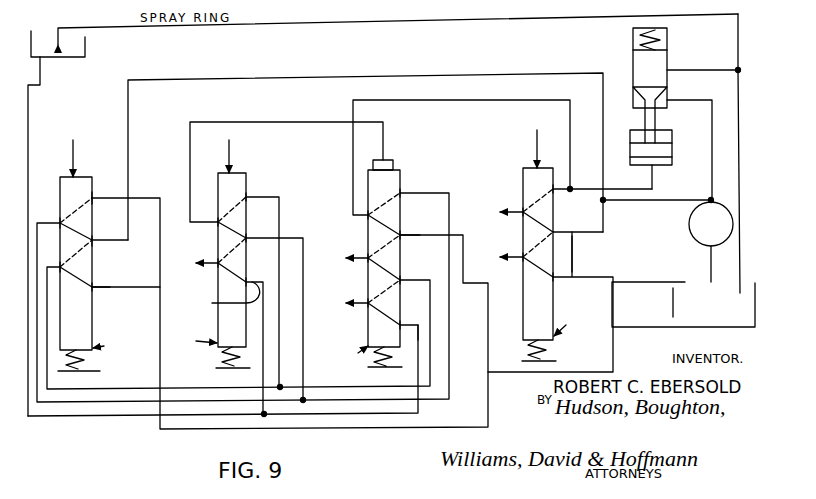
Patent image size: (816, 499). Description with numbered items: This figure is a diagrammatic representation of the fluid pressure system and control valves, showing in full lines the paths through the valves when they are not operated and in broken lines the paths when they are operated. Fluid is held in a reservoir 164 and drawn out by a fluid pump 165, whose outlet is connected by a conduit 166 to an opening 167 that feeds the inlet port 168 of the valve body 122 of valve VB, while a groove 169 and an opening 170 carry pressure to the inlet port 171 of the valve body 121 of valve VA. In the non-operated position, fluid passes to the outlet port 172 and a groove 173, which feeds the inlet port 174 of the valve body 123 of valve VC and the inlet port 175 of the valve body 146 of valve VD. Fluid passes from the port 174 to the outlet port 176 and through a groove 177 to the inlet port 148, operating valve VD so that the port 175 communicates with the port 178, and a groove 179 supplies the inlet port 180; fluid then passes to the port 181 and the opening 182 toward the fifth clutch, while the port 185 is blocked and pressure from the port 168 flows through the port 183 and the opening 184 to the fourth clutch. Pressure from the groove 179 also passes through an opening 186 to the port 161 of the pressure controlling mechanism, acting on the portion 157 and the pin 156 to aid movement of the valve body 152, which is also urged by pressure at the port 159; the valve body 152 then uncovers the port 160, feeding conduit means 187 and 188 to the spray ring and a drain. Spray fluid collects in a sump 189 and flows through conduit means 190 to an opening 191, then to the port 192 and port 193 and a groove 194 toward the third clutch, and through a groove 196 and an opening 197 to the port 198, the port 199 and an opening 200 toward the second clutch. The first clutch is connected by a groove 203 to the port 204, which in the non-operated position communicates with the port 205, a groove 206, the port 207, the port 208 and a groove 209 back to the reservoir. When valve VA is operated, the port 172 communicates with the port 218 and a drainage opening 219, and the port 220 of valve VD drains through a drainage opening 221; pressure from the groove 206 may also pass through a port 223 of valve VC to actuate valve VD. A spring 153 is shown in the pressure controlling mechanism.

The valve body 121 is at (93, 177).
The valve body 122 is at (522, 171).
The valve body 123 is at (246, 174).
The valve body 146 is at (392, 259).
The inlet port 148 is at (394, 160).
The valve body 152 is at (633, 60).
The relief valve spring 153 is at (636, 38).
The pin 156 is at (645, 118).
The portion 157 is at (672, 152).
The port 159 is at (669, 101).
The port 160 is at (668, 70).
The port 161 is at (652, 171).
The reservoir 164 is at (673, 305).
The fluid pump 165 is at (691, 236).
The conduit 166 is at (606, 203).
The opening 167 is at (575, 240).
The inlet port 168 is at (562, 233).
The groove 169 is at (376, 76).
The opening 170 is at (99, 242).
The inlet port 171 is at (94, 240).
The outlet port 172 is at (60, 223).
The groove 173 is at (148, 401).
The inlet port 174 is at (246, 238).
The inlet port 175 is at (401, 194).
The outlet port 176 is at (216, 222).
The groove 177 is at (296, 121).
The port 178 is at (366, 217).
The groove 179 is at (500, 100).
The inlet port 180 is at (560, 280).
The port 181 is at (519, 260).
The opening 182 is at (519, 255).
The port 183 is at (518, 219).
The opening 184 is at (517, 204).
The port 185 is at (565, 185).
The opening 186 is at (636, 178).
The conduit means 187 is at (734, 66).
The conduit means 188 is at (540, 22).
The sump 189 is at (86, 52).
The conduit means 190 is at (29, 133).
The opening 191 is at (418, 323).
The port 192 is at (400, 326).
The port 193 is at (361, 306).
The groove 194 is at (361, 300).
The groove 196 is at (259, 400).
The opening 197 is at (272, 271).
The port 198 is at (223, 296).
The port 199 is at (211, 270).
The opening 200 is at (209, 263).
The groove 203 is at (358, 255).
The port 204 is at (361, 262).
The port 205 is at (401, 280).
The groove 206 is at (207, 386).
The port 207 is at (60, 267).
The port 208 is at (96, 289).
The groove 209 is at (99, 287).
The port 218 is at (94, 198).
The drainage opening 219 is at (117, 199).
The port 220 is at (416, 223).
The drainage opening 221 is at (409, 237).
The port 223 is at (246, 197).